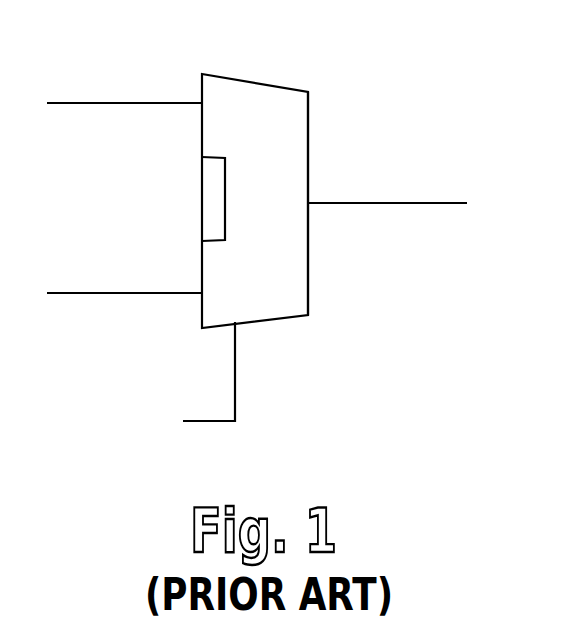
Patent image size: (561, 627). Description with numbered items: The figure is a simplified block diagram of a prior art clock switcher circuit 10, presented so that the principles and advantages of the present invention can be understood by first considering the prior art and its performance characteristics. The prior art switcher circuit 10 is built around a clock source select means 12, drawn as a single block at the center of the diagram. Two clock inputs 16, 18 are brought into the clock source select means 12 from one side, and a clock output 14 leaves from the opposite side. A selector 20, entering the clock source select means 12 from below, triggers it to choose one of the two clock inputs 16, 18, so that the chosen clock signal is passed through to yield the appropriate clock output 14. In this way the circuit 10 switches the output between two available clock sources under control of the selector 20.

The clock switcher circuit 10 is at (302, 164).
The clock source select means 12 is at (308, 80).
The clock output 14 is at (355, 205).
The clock input 16 is at (158, 104).
The clock input 18 is at (153, 295).
The selector 20 is at (236, 370).